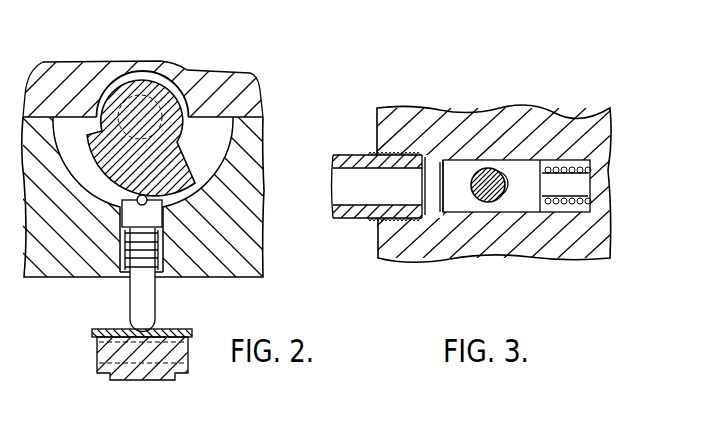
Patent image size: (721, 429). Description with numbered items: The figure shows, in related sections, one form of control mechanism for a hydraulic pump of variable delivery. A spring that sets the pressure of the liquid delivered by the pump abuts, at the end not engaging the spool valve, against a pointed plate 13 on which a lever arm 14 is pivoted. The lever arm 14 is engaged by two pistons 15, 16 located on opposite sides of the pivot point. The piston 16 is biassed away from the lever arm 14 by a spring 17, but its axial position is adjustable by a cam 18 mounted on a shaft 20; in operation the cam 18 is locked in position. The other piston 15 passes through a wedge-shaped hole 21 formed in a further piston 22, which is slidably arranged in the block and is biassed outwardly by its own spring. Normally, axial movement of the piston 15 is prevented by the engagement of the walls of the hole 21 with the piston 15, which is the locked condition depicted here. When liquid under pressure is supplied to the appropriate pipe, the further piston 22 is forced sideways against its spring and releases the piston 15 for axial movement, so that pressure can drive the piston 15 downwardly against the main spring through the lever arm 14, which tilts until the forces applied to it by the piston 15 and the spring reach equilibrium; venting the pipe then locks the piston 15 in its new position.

In FIG. 2, the pointed plate 13 is at (153, 358).
In FIG. 2, the lever arm 14 is at (193, 335).
In FIG. 3, the piston 15 is at (490, 173).
In FIG. 2, the piston 16 is at (143, 313).
In FIG. 2, the spring 17 is at (161, 257).
In FIG. 2, the cam 18 is at (158, 165).
In FIG. 2, the shaft 20 is at (173, 88).
In FIG. 3, the wedge-shaped hole 21 is at (476, 192).
In FIG. 3, the further piston 22 is at (532, 200).